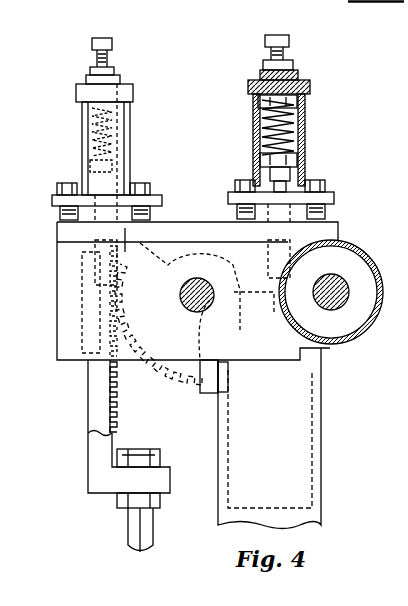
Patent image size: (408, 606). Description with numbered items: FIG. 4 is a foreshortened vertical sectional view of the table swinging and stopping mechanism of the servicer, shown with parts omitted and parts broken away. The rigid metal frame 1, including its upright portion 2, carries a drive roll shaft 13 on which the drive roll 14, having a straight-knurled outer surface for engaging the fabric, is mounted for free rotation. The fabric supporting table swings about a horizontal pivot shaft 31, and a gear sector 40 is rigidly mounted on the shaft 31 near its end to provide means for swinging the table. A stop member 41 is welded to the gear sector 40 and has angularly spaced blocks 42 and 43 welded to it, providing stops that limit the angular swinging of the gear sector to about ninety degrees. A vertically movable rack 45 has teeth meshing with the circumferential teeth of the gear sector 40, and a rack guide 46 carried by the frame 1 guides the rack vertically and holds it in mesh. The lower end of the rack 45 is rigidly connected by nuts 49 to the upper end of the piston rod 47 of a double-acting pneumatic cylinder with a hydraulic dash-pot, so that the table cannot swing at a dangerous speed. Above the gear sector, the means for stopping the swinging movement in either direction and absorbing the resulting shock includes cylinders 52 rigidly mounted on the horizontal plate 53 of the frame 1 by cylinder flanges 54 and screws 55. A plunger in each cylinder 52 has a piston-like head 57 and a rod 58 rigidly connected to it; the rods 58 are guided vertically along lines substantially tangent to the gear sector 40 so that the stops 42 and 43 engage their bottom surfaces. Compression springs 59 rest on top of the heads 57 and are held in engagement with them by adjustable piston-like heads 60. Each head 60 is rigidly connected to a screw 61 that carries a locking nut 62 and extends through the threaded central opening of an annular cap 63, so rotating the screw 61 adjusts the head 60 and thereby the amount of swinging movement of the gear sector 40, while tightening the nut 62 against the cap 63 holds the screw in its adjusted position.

The frame 1 is at (88, 372).
The upright portion 2 is at (322, 462).
The drive roll shaft 13 is at (340, 305).
The drive roll 14 is at (340, 243).
The pivot shaft 31 is at (180, 299).
The gear sector 40 is at (158, 336).
The stop member 41 is at (196, 330).
The block 42 is at (208, 395).
The block 43 is at (207, 290).
The rack 45 is at (92, 456).
The rack guide 46 is at (85, 368).
The piston rod 47 is at (128, 543).
The nuts 49 is at (176, 455).
The cylinder 52 is at (130, 120).
The horizontal plate 53 is at (170, 222).
The cylinder flange 54 is at (95, 197).
The screws 55 is at (65, 214).
The piston-like head 57 is at (295, 155).
The rod 58 is at (288, 172).
The compression spring 59 is at (92, 132).
The adjustable piston-like head 60 is at (258, 103).
The screw 61 is at (108, 58).
The locking nut 62 is at (92, 70).
The annular cap 63 is at (298, 74).